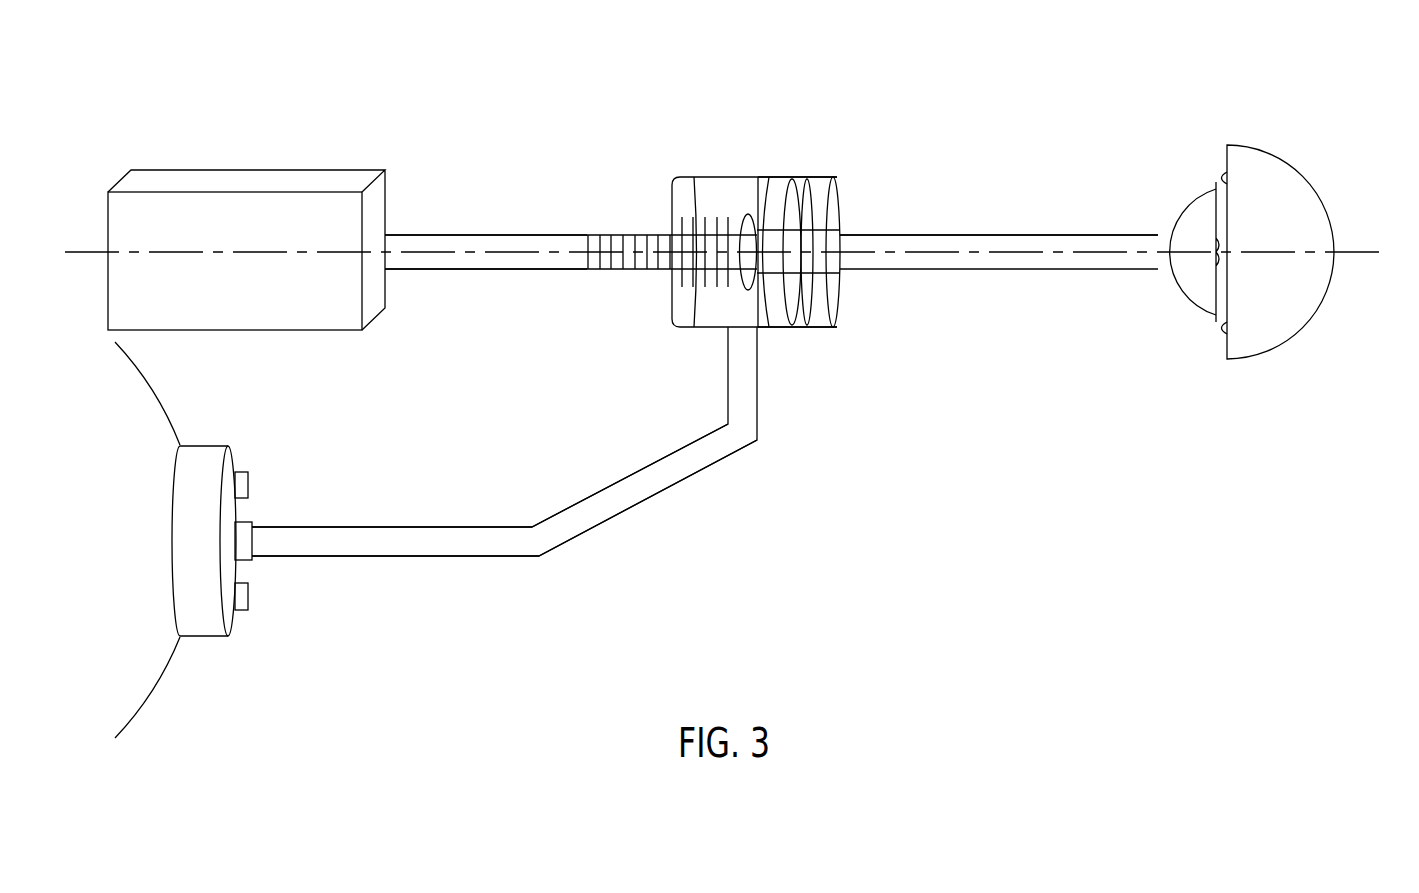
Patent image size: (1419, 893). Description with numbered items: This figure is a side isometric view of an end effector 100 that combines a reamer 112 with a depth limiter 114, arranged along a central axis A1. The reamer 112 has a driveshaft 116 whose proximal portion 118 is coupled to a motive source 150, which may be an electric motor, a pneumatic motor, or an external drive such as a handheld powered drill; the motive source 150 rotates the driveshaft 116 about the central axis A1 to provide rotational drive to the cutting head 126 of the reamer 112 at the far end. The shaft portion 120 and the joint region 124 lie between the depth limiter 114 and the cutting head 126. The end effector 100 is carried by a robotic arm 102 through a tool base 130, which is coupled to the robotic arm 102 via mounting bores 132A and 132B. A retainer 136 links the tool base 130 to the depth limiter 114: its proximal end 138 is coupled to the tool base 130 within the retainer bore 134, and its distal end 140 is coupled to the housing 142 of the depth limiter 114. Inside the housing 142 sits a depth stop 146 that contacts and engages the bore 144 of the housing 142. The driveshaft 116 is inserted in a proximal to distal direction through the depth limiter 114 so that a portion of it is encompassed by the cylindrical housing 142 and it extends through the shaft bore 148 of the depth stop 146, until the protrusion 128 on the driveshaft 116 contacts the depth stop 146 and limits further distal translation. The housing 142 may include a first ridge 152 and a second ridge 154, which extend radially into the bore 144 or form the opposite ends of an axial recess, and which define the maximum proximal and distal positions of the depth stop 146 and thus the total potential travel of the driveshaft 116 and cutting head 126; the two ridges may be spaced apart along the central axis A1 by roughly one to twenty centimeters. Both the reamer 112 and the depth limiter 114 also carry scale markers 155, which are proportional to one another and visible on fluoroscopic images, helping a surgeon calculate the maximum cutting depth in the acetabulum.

The end effector 100 is at (1255, 68).
The robotic arm 102 is at (163, 384).
The reamer 112 is at (1025, 280).
The depth limiter 114 is at (737, 173).
The driveshaft 116 is at (502, 280).
The proximal portion 118 is at (497, 235).
The second shaft 120 is at (970, 235).
The ball joint 124 is at (1178, 206).
The cutting head 126 is at (1306, 190).
The protrusion 128 is at (747, 290).
The tool base 130 is at (208, 445).
The mounting bore 132A is at (252, 485).
The mounting bore 132B is at (250, 598).
The retainer bore 134 is at (247, 563).
The retainer 136 is at (540, 558).
The proximal end 138 is at (402, 560).
The distal end 140 is at (742, 390).
The housing 142 is at (688, 178).
The bore 144 is at (838, 218).
The depth stop 146 is at (793, 197).
The shaft bore 148 is at (768, 278).
The motive source 150 is at (262, 170).
The first ridge 152 is at (693, 307).
The second ridge 154 is at (805, 290).
The scale markers 155 is at (682, 277).
The central axis A1 is at (1353, 252).